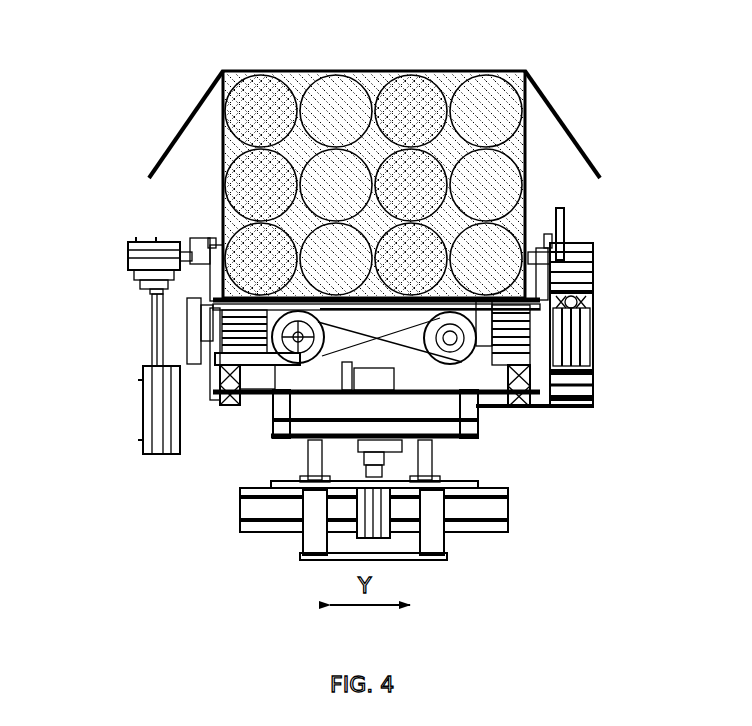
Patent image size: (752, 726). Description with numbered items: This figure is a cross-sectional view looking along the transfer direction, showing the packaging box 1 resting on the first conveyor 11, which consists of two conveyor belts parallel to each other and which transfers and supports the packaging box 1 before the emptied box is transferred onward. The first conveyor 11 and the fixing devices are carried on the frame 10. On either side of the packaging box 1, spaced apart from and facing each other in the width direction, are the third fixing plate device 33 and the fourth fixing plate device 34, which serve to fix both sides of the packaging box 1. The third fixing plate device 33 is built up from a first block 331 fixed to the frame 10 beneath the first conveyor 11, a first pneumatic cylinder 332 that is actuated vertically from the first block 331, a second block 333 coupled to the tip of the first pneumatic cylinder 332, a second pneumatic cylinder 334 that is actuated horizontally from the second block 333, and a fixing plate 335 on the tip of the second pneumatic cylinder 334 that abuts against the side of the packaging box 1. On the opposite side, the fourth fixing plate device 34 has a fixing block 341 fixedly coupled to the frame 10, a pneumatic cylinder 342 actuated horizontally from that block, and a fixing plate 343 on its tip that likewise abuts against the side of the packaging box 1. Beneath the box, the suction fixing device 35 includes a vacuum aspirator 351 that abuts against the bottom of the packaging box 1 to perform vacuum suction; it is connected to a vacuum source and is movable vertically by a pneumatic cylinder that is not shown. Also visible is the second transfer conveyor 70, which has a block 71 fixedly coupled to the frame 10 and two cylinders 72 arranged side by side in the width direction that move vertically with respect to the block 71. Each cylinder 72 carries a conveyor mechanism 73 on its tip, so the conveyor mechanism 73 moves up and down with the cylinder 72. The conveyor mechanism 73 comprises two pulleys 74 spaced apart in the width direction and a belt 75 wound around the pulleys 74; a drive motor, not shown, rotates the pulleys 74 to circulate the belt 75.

The packaging box 1 is at (578, 138).
The first conveyor 11 is at (247, 290).
The frame 10 is at (249, 547).
The third fixing plate device 33 is at (120, 301).
The first block 331 is at (134, 403).
The first pneumatic cylinder 332 is at (137, 348).
The second block 333 is at (120, 280).
The second pneumatic cylinder 334 is at (192, 243).
The fixing plate 335 is at (215, 243).
The fourth fixing plate device 34 is at (615, 308).
The fixing block 341 is at (602, 347).
The pneumatic cylinder 342 is at (596, 257).
The fixing plate 343 is at (572, 234).
The suction fixing device 35 is at (618, 387).
The vacuum aspirator 351 is at (594, 358).
The second transfer conveyor 70 is at (330, 412).
The block 71 is at (284, 477).
The cylinders 72 is at (312, 452).
The conveyor mechanism 73 is at (507, 422).
The pulleys 74 is at (479, 436).
The belt 75 is at (407, 364).